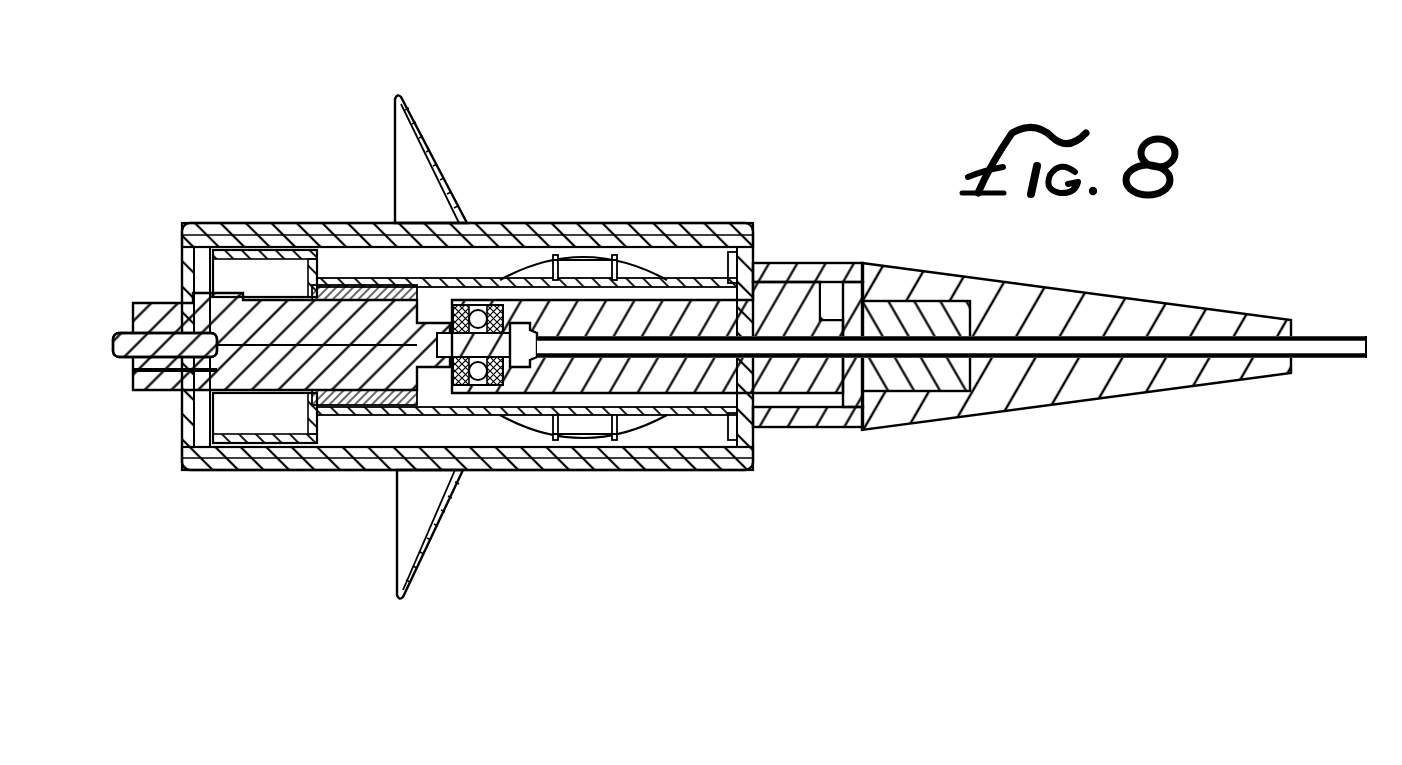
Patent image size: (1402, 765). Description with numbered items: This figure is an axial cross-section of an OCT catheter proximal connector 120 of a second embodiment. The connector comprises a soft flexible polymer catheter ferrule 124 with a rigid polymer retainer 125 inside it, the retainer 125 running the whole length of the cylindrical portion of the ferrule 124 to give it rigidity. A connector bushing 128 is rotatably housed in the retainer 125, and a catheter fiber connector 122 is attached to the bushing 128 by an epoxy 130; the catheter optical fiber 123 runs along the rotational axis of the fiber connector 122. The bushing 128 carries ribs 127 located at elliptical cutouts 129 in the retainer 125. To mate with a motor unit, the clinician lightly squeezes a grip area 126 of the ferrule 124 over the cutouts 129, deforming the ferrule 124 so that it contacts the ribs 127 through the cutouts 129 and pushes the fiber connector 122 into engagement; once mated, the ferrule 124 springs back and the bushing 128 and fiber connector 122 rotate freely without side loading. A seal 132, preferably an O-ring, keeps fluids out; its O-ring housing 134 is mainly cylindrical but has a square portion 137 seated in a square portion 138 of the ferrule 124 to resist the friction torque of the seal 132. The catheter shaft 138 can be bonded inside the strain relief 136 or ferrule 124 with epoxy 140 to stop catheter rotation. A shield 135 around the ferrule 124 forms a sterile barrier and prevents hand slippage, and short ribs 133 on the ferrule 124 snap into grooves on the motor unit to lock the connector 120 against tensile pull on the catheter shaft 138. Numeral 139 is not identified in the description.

The OCT catheter proximal connector 120 is at (134, 638).
The catheter fiber connector 122 is at (147, 303).
The catheter optical fiber 123 is at (125, 357).
The catheter ferrule 124 is at (200, 223).
The retainer 125 is at (283, 223).
The grip area 126 is at (477, 128).
The ribs 127 is at (610, 260).
The connector bushing 128 is at (705, 283).
The elliptical cutouts 129 is at (640, 415).
The epoxy 130 is at (330, 395).
The seal 132 is at (495, 385).
The short ribs 133 is at (345, 223).
The O-ring housing 134 is at (522, 370).
The shield 135 is at (437, 530).
The strain relief 136 is at (878, 418).
The square portion 137 is at (815, 290).
The catheter shaft 138 is at (1322, 358).
The collar 139 is at (797, 265).
The epoxy 140 is at (938, 360).